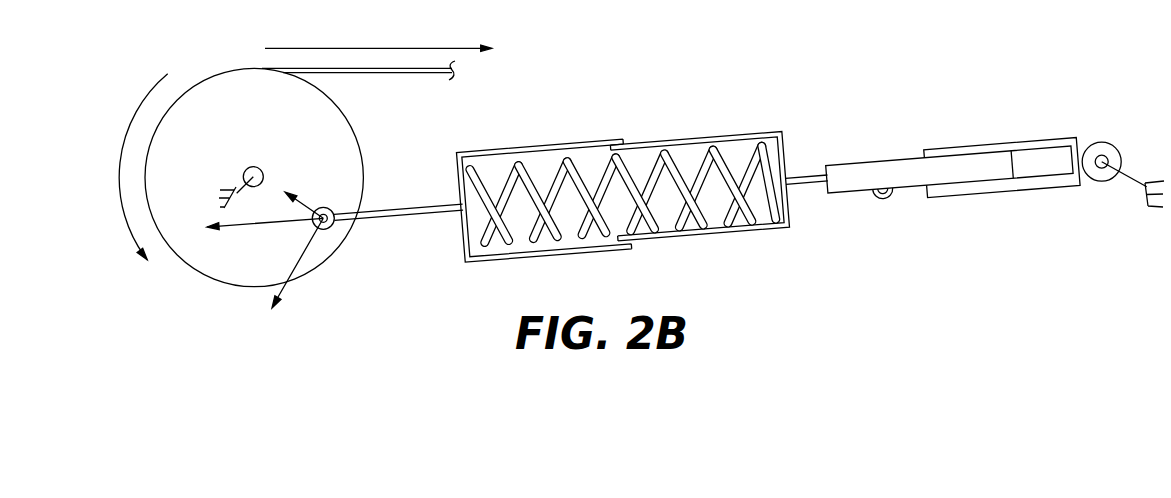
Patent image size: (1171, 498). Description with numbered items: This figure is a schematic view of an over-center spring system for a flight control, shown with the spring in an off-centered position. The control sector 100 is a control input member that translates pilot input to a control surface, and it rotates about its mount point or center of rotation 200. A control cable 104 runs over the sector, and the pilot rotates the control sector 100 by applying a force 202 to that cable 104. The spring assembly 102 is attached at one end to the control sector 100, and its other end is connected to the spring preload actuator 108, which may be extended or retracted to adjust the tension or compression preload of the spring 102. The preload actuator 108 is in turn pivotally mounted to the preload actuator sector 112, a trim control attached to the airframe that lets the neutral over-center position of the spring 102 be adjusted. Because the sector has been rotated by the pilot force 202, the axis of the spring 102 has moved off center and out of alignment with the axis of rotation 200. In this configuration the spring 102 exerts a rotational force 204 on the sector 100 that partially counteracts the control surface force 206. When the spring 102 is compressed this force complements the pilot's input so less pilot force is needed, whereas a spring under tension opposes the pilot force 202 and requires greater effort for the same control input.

The control sector 100 is at (219, 72).
The spring assembly 102 is at (572, 97).
The control cable 104 is at (372, 73).
The spring preload actuator 108 is at (830, 197).
The preload actuator sector 112 is at (1117, 148).
The center of rotation 200 is at (254, 167).
The pilot force 202 is at (347, 48).
The rotational force 204 is at (298, 263).
The control surface force 206 is at (128, 133).